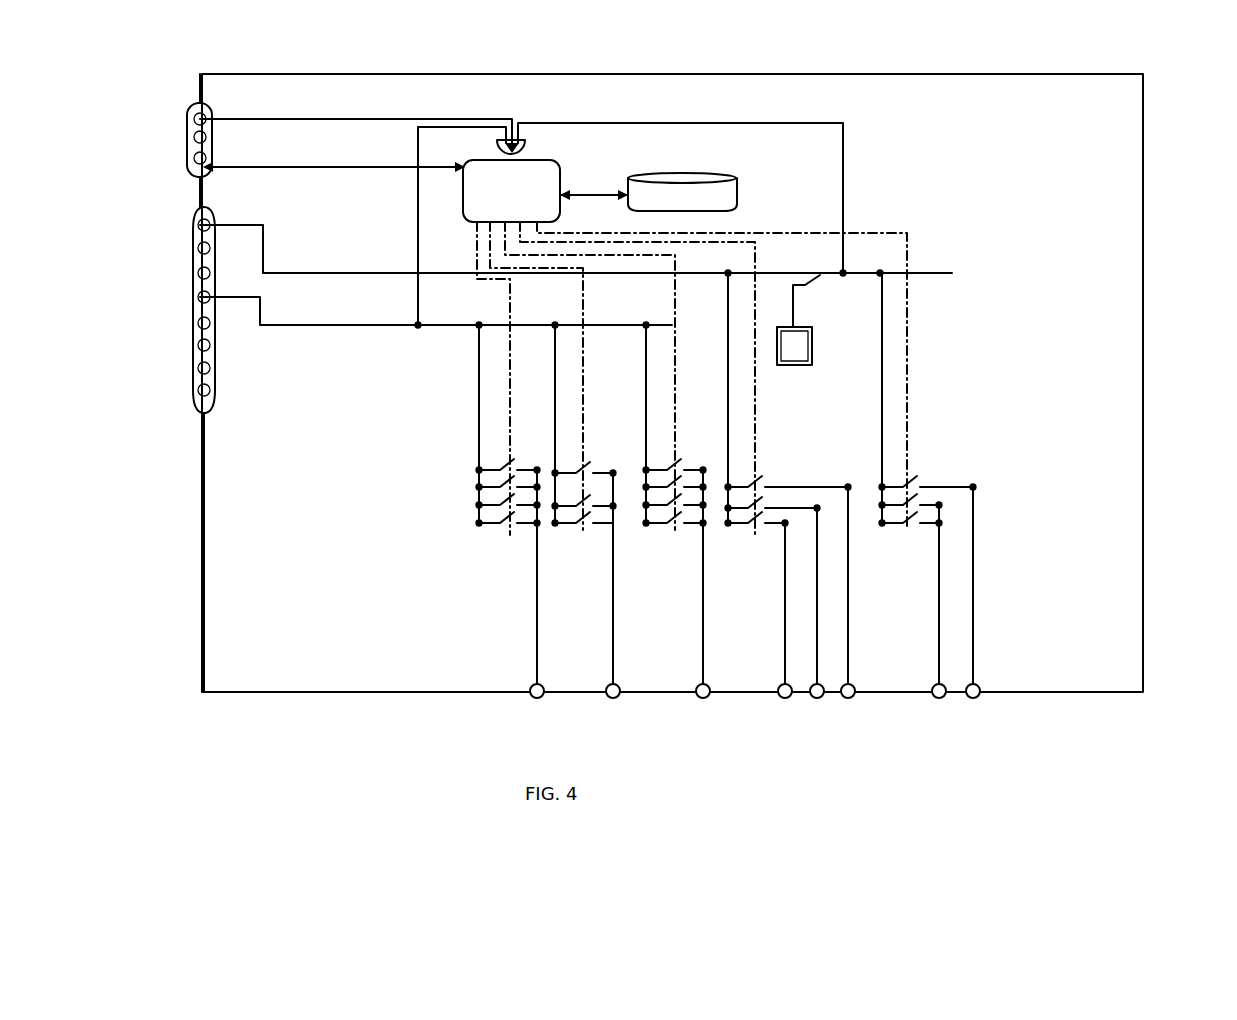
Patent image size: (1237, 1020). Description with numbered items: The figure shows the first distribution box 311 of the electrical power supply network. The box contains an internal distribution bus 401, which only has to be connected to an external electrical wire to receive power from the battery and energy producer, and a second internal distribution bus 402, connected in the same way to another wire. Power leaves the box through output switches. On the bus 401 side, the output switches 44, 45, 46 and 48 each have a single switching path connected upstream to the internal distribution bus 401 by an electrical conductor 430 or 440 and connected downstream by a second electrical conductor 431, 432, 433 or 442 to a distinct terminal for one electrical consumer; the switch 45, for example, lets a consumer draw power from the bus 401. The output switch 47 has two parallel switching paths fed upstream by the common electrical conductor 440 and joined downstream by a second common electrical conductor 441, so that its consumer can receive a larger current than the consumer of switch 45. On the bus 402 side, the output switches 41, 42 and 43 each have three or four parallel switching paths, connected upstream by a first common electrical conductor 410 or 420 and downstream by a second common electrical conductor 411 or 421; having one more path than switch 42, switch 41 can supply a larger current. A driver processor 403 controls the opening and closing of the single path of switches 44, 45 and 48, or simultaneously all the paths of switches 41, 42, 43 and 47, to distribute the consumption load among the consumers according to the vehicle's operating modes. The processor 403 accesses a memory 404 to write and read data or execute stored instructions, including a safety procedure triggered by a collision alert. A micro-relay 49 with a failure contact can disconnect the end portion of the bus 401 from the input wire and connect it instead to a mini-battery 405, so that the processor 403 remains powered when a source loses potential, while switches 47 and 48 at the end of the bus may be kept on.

The distribution box 311 is at (1142, 362).
The internal distribution bus 401 is at (936, 272).
The internal distribution bus 402 is at (325, 327).
The driver processor 403 is at (556, 160).
The memory 404 is at (706, 175).
The mini-battery 405 is at (812, 345).
The micro-relay 49 is at (818, 283).
The first common electrical conductor 410 is at (479, 440).
The output switch 41 is at (500, 533).
The second common electrical conductor 411 is at (537, 630).
The first common electrical conductor 420 is at (554, 428).
The output switch 42 is at (577, 533).
The second common electrical conductor 421 is at (612, 607).
The electrical conductor 430 is at (728, 415).
The output switch 43 is at (668, 530).
The second electrical conductor 431 is at (783, 650).
The output switch 44 is at (750, 530).
The output switch 45 is at (768, 505).
The output switch 46 is at (752, 480).
The second electrical conductor 432 is at (817, 600).
The second electrical conductor 433 is at (847, 643).
The common electrical conductor 440 is at (882, 390).
The output switch 47 is at (905, 535).
The output switch 48 is at (915, 470).
The second common electrical conductor 441 is at (935, 607).
The second electrical conductor 442 is at (973, 572).